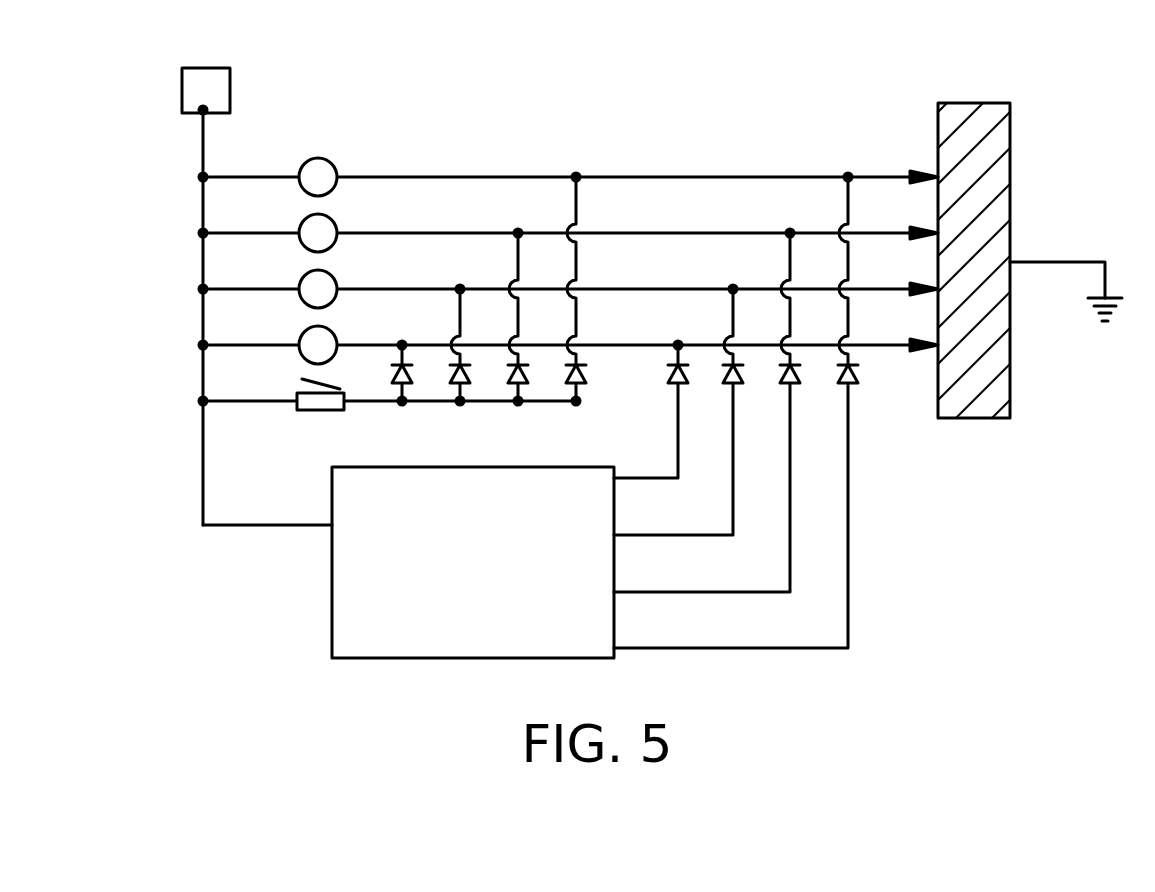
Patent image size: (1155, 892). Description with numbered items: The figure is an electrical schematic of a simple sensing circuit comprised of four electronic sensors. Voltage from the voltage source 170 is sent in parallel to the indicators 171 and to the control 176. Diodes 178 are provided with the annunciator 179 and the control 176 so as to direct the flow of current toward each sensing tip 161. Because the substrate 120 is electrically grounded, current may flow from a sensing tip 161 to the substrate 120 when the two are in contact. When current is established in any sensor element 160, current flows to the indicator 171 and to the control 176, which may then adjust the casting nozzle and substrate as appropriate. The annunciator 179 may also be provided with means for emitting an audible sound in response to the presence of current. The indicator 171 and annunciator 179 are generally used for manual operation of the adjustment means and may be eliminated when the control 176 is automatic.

The substrate 120 is at (968, 108).
The sensor element 160 is at (742, 176).
The sensing tip 161 is at (928, 168).
The voltage source 170 is at (188, 94).
The indicator 171 is at (327, 161).
The control 176 is at (430, 543).
The diodes 178 is at (668, 377).
The annunciator 179 is at (325, 411).